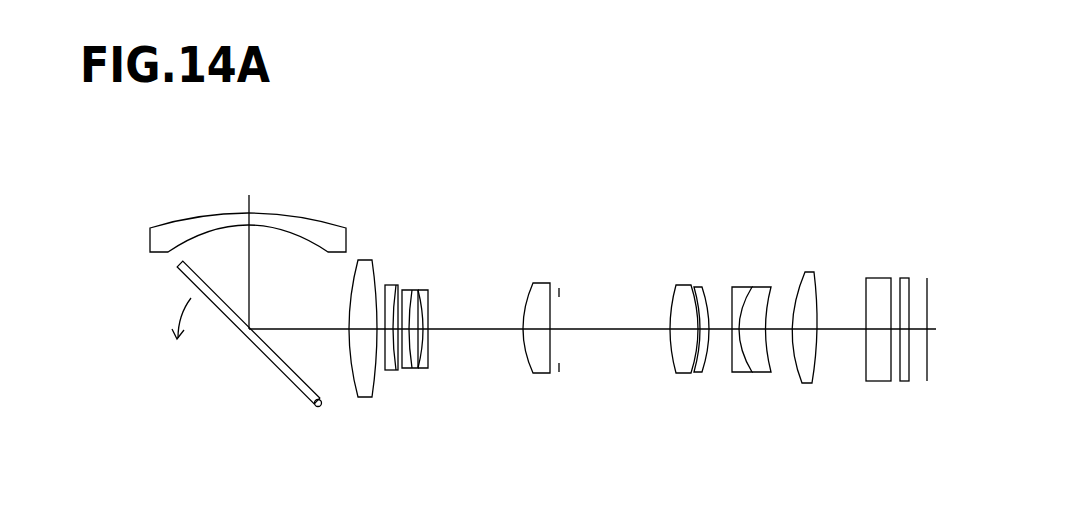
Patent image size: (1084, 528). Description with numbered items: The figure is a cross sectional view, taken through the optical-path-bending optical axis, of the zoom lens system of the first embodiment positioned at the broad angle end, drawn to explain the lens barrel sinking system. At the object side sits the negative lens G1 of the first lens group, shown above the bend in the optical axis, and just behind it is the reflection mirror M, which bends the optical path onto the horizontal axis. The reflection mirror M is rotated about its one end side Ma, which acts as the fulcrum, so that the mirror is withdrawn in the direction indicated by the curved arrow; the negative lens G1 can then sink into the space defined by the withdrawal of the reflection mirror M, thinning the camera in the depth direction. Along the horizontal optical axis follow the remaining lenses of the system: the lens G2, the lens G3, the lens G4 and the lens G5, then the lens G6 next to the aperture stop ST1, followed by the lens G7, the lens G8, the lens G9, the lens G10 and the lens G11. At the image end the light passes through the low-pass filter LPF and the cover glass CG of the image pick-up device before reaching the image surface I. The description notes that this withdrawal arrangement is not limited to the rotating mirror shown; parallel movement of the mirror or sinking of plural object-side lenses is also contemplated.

The negative lens G1 is at (161, 242).
The reflection mirror M is at (288, 375).
The one end side of the reflection mirror Ma is at (318, 409).
The lens G2 is at (367, 270).
The lens G3 is at (391, 290).
The lens G4 is at (410, 296).
The lens G5 is at (426, 296).
The lens G6 is at (543, 293).
The aperture stop ST1 is at (560, 364).
The lens G7 is at (683, 297).
The lens G8 is at (697, 295).
The lens G9 is at (742, 295).
The lens G10 is at (765, 295).
The lens G11 is at (808, 282).
The low-pass filter LPF is at (878, 283).
The cover glass CG is at (905, 385).
The image surface I is at (927, 368).